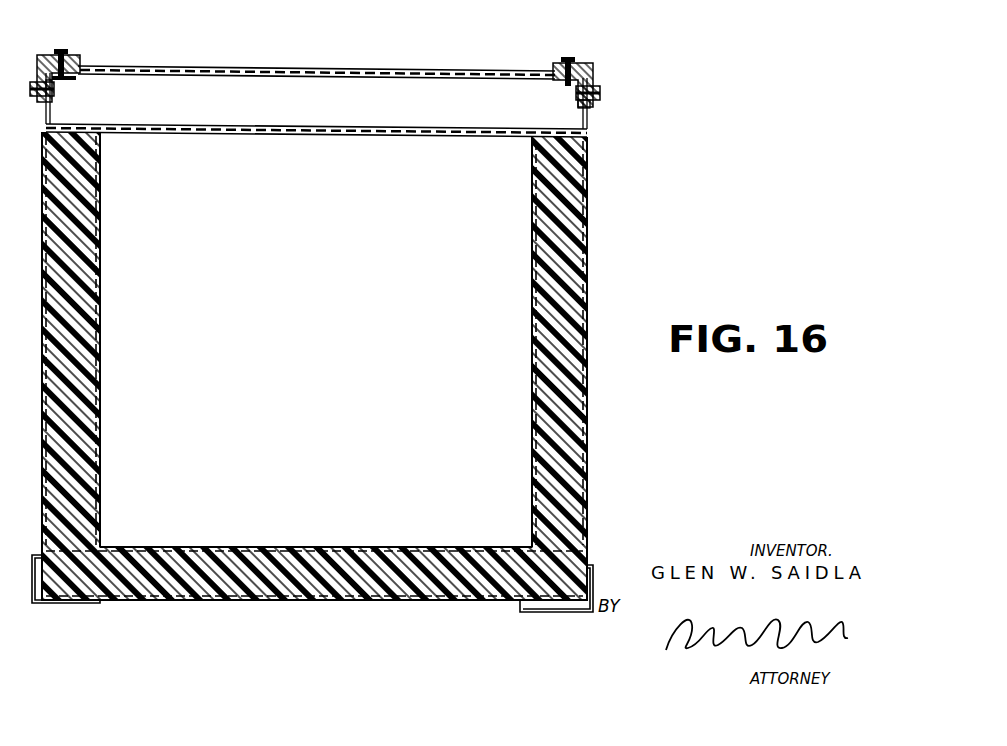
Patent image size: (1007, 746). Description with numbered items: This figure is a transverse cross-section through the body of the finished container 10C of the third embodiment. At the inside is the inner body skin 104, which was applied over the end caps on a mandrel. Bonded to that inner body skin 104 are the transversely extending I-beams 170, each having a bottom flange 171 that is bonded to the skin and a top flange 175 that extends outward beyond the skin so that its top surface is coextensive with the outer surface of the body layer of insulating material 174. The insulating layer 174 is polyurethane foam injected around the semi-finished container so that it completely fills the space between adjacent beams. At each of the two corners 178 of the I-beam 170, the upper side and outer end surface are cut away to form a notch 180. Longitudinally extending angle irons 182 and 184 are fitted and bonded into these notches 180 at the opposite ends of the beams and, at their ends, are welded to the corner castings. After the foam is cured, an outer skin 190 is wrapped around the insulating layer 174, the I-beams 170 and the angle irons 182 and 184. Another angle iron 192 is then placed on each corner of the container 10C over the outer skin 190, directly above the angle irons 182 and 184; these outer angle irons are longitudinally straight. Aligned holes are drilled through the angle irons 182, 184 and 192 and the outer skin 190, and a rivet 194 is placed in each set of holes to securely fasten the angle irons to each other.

The inner body skin 104 is at (533, 223).
The I-beam 170 is at (316, 104).
The bottom flange 171 is at (148, 127).
The body layer of insulating material 174 is at (190, 578).
The top flange 175 is at (430, 75).
The corner 178 is at (66, 84).
The notch 180 is at (596, 101).
The angle iron 182 is at (70, 80).
The angle iron 184 is at (600, 78).
The outer skin 190 is at (586, 230).
The angle iron 192 is at (76, 62).
The rivet 194 is at (62, 52).
The container 10C is at (731, 1).